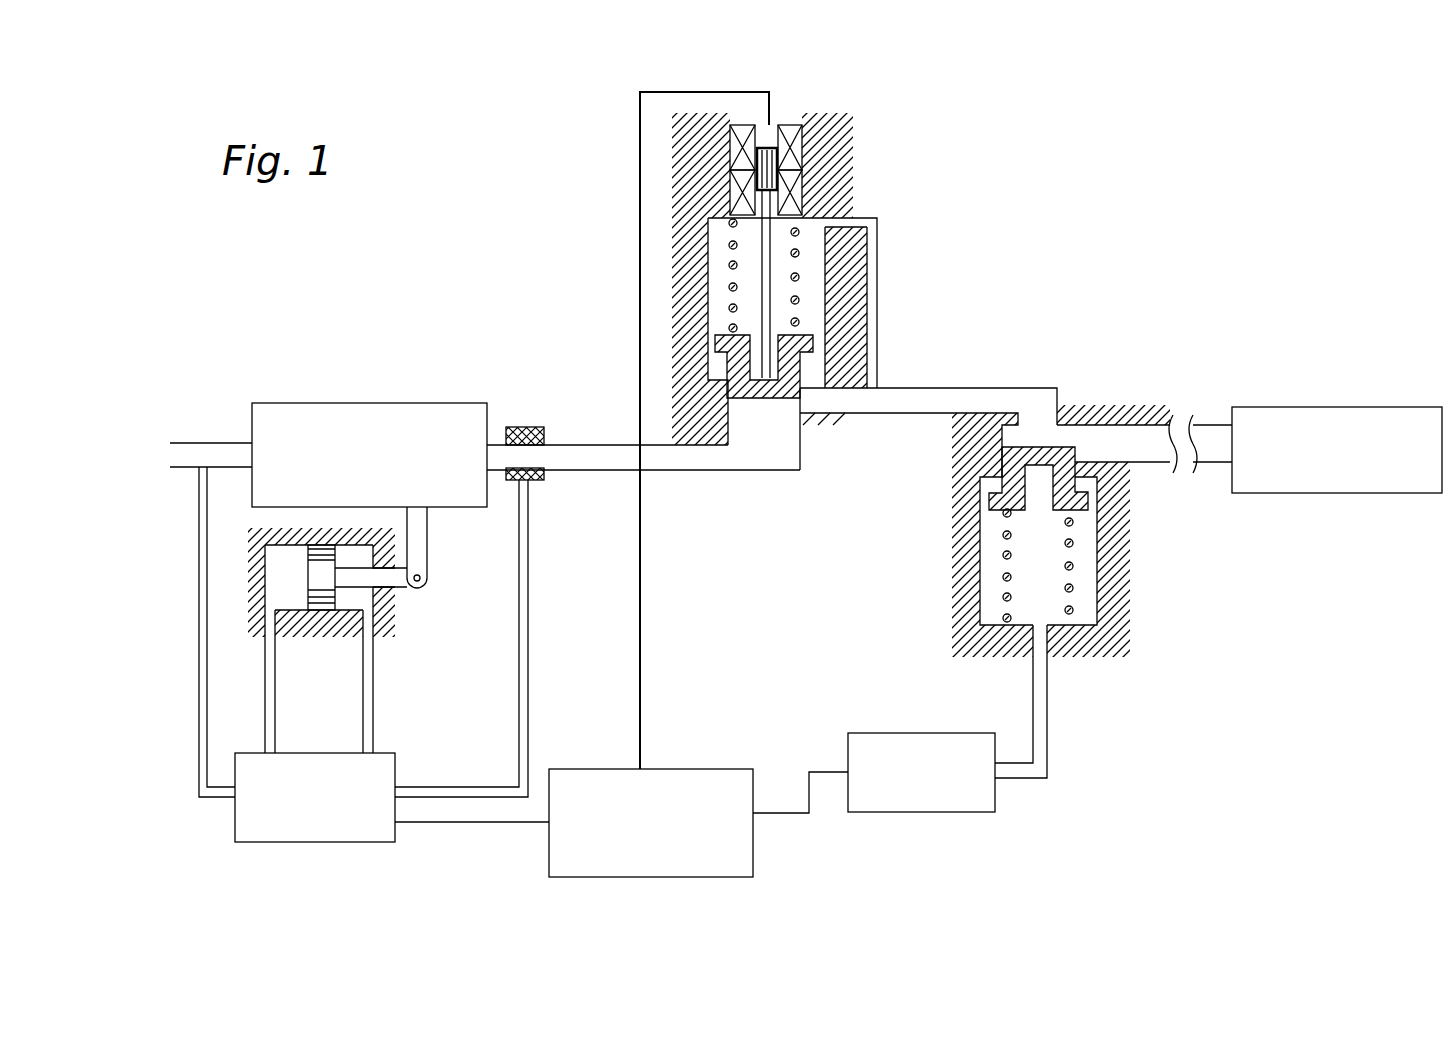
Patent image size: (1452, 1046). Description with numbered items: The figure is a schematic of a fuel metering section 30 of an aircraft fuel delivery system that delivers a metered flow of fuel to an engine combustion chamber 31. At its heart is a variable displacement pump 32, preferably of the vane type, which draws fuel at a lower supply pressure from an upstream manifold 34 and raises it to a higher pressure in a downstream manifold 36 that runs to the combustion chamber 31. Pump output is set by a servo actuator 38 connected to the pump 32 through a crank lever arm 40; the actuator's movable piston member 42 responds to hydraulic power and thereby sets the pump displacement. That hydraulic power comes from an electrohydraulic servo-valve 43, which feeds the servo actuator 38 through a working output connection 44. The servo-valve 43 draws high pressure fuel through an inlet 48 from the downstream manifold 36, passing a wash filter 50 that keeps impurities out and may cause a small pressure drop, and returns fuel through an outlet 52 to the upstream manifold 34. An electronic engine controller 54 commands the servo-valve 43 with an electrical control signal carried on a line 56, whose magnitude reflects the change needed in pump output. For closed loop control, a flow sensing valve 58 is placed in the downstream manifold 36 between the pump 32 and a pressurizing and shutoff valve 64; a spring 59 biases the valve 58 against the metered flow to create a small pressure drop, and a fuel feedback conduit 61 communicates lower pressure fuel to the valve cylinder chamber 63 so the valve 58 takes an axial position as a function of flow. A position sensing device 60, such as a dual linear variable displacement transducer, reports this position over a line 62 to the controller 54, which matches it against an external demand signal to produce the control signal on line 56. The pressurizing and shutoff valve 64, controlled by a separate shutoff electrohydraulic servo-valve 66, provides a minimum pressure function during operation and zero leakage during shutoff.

The fuel metering section 30 is at (474, 312).
The combustion chamber 31 is at (1433, 492).
The variable displacement pump 32 is at (472, 502).
The upstream manifold 34 is at (197, 443).
The downstream manifold 36 is at (718, 470).
The servo actuator 38 is at (312, 527).
The crank lever arm 40 is at (424, 550).
The movable piston member 42 is at (323, 596).
The electrohydraulic servo-valve 43 is at (385, 836).
The working output connection 44 is at (362, 748).
The inlet 48 is at (526, 706).
The wash filter 50 is at (544, 478).
The outlet 52 is at (199, 682).
The electronic engine controller 54 is at (742, 874).
The line 56 is at (480, 822).
The flow sensing valve 58 is at (708, 372).
The spring 59 is at (728, 287).
The position sensing device 60 is at (795, 143).
The fuel feedback conduit 61 is at (877, 264).
The line 62 is at (639, 234).
The valve cylinder chamber 63 is at (783, 312).
The pressurizing and shutoff valve 64 is at (1010, 487).
The shutoff electrohydraulic servo-valve 66 is at (987, 807).